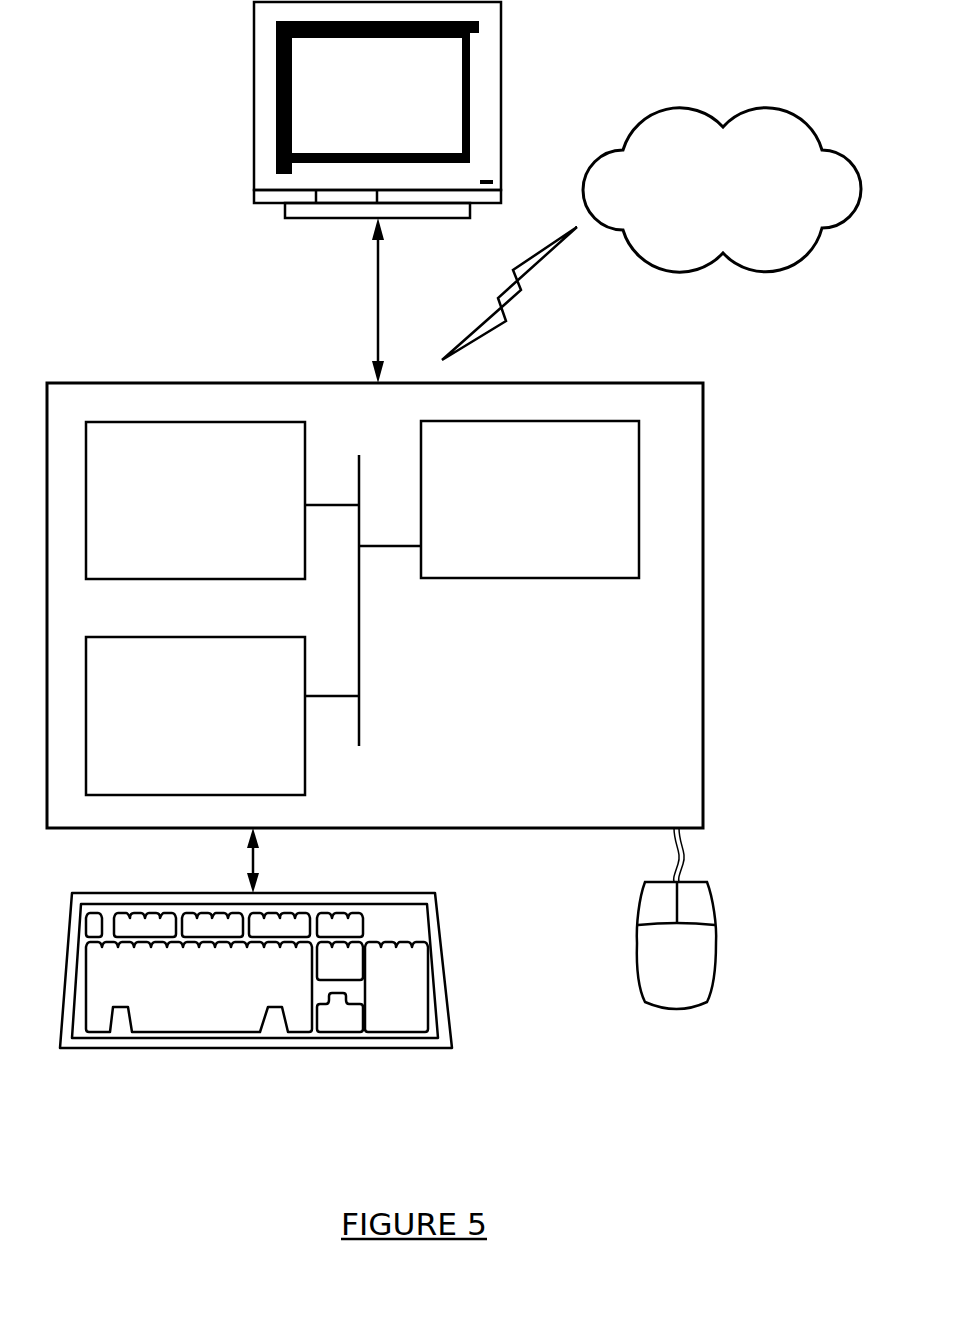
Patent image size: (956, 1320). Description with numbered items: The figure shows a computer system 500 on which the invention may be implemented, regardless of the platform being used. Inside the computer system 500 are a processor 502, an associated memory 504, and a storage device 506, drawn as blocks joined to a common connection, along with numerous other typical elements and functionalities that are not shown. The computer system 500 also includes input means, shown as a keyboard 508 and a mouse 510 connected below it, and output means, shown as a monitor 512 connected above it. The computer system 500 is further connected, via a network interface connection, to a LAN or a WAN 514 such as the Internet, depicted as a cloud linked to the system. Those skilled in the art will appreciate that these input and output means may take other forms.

The computer system 500 is at (732, 649).
The processor 502 is at (529, 510).
The memory 504 is at (176, 512).
The storage device 506 is at (176, 728).
The keyboard 508 is at (170, 1009).
The mouse 510 is at (659, 965).
The monitor 512 is at (350, 112).
The LAN or WAN 514 is at (717, 200).